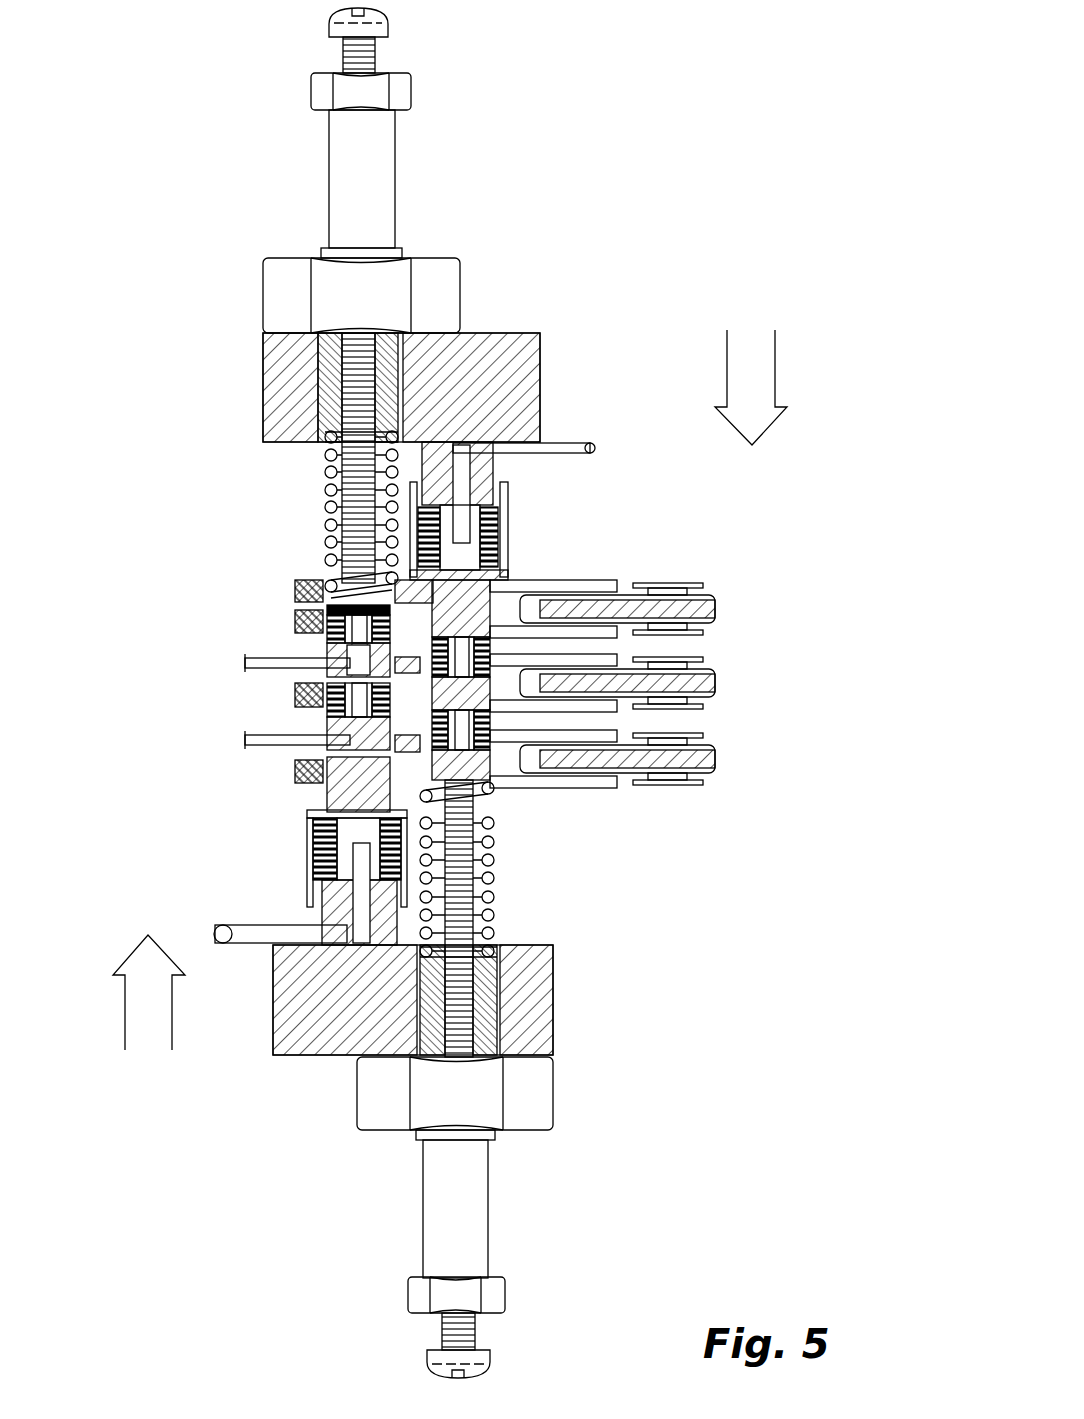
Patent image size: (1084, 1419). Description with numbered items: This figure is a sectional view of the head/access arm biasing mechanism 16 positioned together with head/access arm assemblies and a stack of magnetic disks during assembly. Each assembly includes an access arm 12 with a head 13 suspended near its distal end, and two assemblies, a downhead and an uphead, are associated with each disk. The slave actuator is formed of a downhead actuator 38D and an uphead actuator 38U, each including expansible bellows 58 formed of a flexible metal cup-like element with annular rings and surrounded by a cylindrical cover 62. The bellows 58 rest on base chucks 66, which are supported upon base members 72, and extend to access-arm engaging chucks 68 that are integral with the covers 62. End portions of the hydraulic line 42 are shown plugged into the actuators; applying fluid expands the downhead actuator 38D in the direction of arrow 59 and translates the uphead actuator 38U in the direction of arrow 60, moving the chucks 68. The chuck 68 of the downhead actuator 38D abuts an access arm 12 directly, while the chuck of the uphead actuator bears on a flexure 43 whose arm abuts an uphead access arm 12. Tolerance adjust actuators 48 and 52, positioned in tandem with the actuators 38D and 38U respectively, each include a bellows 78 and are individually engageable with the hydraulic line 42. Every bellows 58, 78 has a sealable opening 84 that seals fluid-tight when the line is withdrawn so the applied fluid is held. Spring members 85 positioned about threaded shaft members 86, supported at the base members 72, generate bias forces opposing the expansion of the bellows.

The access arm 12 is at (592, 585).
The head 13 is at (755, 620).
The head/access arm biasing mechanism 16 is at (595, 191).
The uphead actuator 38U is at (513, 490).
The downhead actuator 38D is at (305, 850).
The hydraulic line 42 is at (497, 450).
The flexure 43 is at (297, 755).
The downhead tolerance adjust actuator 48 is at (295, 620).
The uphead tolerance adjust actuator 52 is at (487, 640).
The expansible bellows 58 is at (500, 512).
The arrow 59 is at (123, 1040).
The arrow 60 is at (777, 350).
The cylindrical cover 62 is at (510, 527).
The base chuck 66 is at (480, 473).
The access-arm engaging chuck 68 is at (487, 600).
The base member 72 is at (527, 335).
The bellows 78 is at (297, 683).
The sealable opening 84 is at (293, 765).
The spring member 85 is at (332, 455).
The threaded shaft member 86 is at (355, 482).